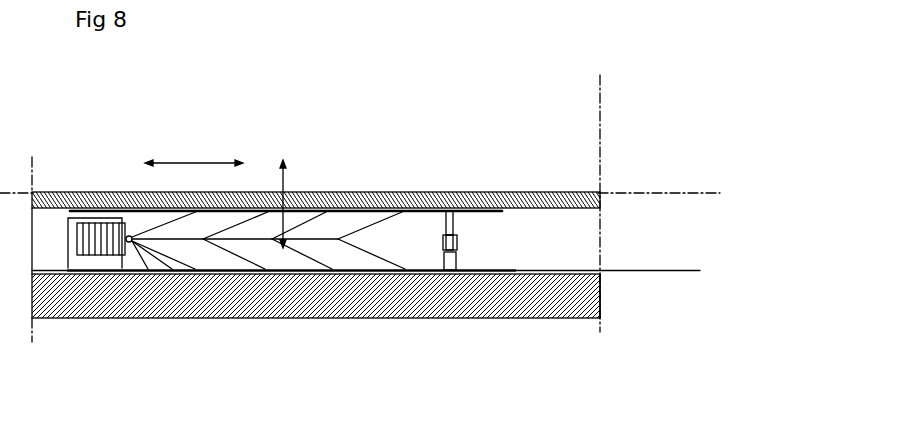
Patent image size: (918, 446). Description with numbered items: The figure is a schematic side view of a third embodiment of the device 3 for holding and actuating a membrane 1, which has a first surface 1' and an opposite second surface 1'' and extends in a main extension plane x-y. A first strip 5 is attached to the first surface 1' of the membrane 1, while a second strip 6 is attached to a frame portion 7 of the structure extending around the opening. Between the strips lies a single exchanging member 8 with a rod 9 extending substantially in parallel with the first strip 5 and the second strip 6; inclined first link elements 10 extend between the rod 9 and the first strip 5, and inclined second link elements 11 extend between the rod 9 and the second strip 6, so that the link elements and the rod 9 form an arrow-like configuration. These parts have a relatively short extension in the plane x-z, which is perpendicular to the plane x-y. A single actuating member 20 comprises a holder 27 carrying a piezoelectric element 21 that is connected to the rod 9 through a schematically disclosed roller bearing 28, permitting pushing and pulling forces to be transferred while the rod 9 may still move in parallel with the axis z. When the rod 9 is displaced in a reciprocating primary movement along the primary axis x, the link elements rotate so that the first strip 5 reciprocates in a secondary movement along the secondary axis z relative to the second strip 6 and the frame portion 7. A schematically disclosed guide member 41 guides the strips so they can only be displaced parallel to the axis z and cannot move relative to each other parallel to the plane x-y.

The membrane 1 is at (316, 136).
The first surface 1' is at (51, 128).
The second surface 1'' is at (57, 297).
The actuating member 20 is at (99, 212).
The holder 27 is at (88, 262).
The piezoelectric element 21 is at (113, 247).
The roller bearing 28 is at (131, 242).
The second link elements 11 is at (210, 239).
The rod 9 is at (313, 239).
The exchanging member 8 is at (327, 216).
The first link elements 10 is at (372, 223).
The guide member 41 is at (446, 212).
The first strip 5 is at (470, 192).
The second strip 6 is at (295, 272).
The frame portion 7 is at (515, 296).
The device 3 is at (574, 279).
The primary axis x is at (218, 163).
The secondary axis z is at (282, 186).
The plane x-z is at (599, 135).
The main extension plane x-y is at (641, 191).